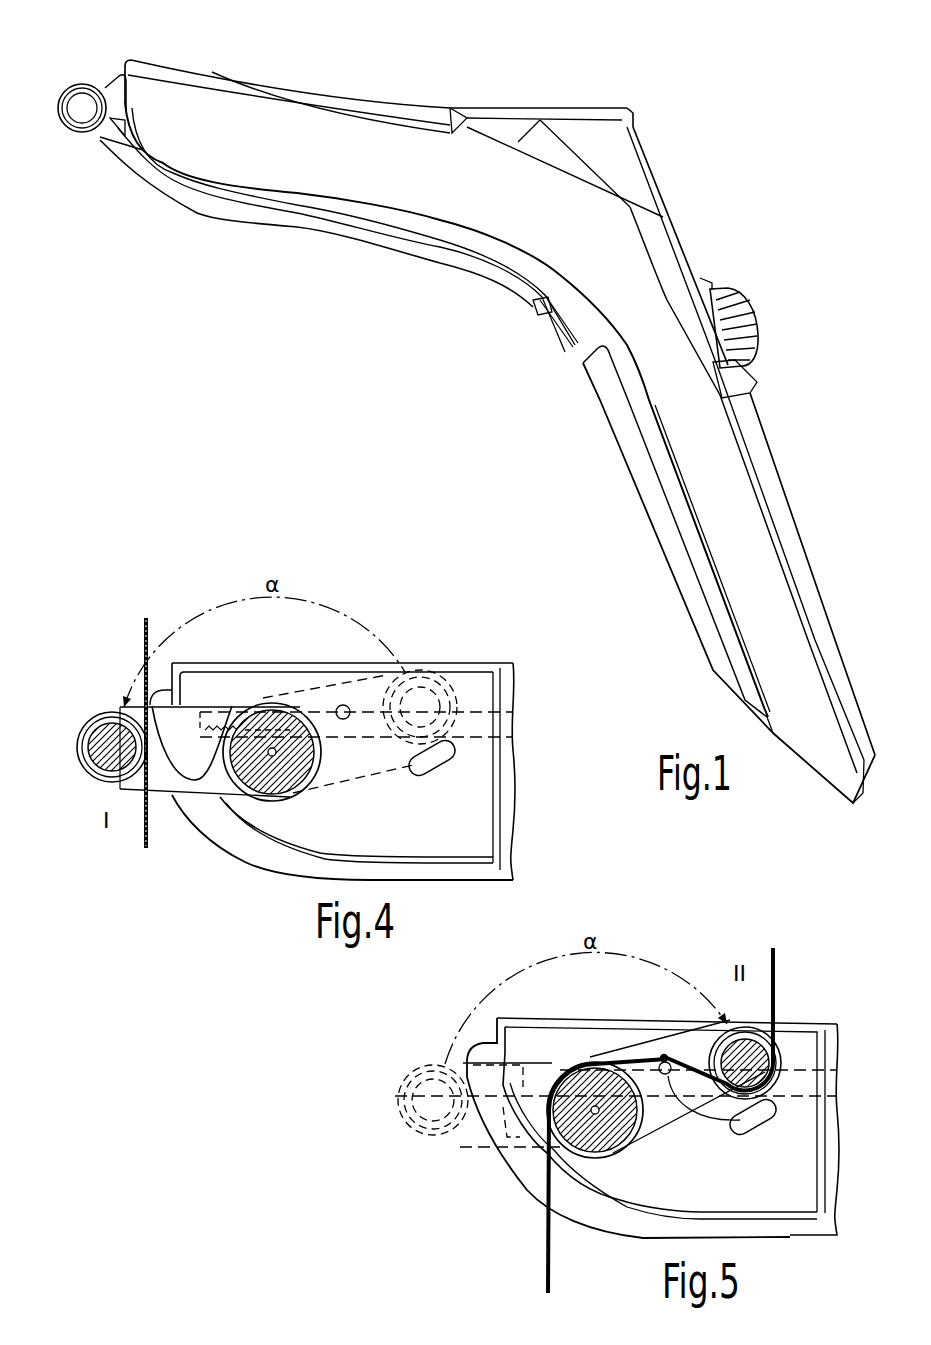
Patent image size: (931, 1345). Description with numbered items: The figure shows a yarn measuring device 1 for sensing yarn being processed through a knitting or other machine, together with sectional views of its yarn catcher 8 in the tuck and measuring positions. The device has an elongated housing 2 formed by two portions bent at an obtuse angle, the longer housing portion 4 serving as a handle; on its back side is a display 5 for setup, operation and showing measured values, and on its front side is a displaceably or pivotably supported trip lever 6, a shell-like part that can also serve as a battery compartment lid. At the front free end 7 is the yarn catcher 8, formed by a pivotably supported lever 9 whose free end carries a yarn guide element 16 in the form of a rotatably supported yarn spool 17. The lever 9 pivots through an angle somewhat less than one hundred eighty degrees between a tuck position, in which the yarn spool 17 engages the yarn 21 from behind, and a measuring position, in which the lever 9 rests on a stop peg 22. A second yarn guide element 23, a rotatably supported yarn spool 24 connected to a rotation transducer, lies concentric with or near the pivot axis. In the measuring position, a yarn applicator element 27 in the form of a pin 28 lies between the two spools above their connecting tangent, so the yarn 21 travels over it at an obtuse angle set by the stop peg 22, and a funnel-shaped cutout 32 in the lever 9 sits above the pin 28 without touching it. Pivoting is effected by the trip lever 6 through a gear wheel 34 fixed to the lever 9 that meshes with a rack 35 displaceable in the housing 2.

In FIG. 1, the yarn measuring device 1 is at (760, 100).
In FIG. 1, the housing 2 is at (330, 172).
In FIG. 1, the housing portion 4 is at (738, 495).
In FIG. 1, the display 5 is at (665, 183).
In FIG. 1, the trip lever 6 is at (757, 311).
In FIG. 1, the front free end 7 is at (172, 45).
In FIG. 1, the yarn catcher 8 is at (97, 150).
In FIG. 4, the yarn catcher 8 is at (168, 603).
In FIG. 1, the lever 9 is at (112, 132).
In FIG. 4, the lever 9 is at (220, 773).
In FIG. 5, the lever 9 is at (715, 1100).
In FIG. 4, the yarn guide element 16 is at (80, 782).
In FIG. 5, the yarn guide element 16 is at (760, 1012).
In FIG. 4, the yarn spool 17 is at (115, 735).
In FIG. 5, the yarn spool 17 is at (778, 1090).
In FIG. 4, the yarn 21 is at (150, 826).
In FIG. 5, the yarn 21 is at (548, 1253).
In FIG. 4, the stop peg 22 is at (432, 762).
In FIG. 5, the stop peg 22 is at (750, 1122).
In FIG. 5, the yarn guide element 23 is at (597, 1050).
In FIG. 5, the yarn spool 24 is at (613, 1157).
In FIG. 5, the yarn applicator element 27 is at (664, 1040).
In FIG. 5, the pin 28 is at (667, 1078).
In FIG. 4, the funnel-shaped cutout 32 is at (192, 735).
In FIG. 4, the gear wheel 34 is at (300, 790).
In FIG. 4, the rack 35 is at (462, 725).